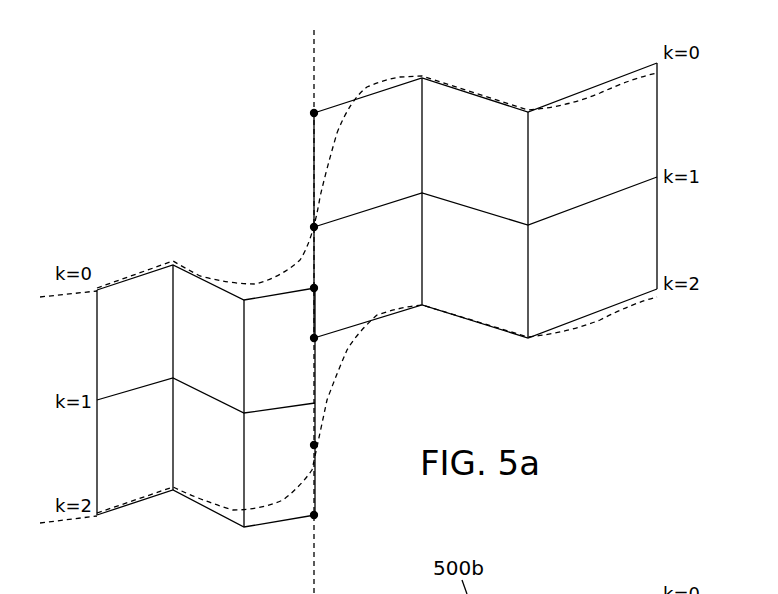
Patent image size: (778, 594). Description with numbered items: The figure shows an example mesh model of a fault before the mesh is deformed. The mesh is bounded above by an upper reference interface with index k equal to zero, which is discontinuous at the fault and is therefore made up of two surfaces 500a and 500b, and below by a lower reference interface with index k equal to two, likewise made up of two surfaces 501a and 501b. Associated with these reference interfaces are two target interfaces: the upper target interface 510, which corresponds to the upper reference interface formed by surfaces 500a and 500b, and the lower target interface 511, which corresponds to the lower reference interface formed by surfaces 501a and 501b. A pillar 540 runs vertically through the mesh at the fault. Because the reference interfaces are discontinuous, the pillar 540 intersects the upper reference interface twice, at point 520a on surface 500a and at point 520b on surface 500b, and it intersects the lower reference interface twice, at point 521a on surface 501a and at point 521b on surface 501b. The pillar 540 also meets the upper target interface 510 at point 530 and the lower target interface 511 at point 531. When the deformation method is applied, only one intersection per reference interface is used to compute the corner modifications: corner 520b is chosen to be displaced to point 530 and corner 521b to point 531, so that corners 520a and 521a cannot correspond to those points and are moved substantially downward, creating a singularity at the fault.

The surface of upper reference interface 500a is at (200, 277).
The surface of upper reference interface 500b is at (477, 92).
The surface of lower reference interface 501a is at (208, 513).
The surface of lower reference interface 501b is at (496, 333).
The upper target interface 510 is at (283, 262).
The lower target interface 511 is at (352, 355).
The intersection point 520a is at (314, 288).
The intersection point 520b is at (314, 113).
The intersection point 521a is at (315, 518).
The intersection point 521b is at (314, 338).
The point 530 is at (314, 227).
The point 531 is at (314, 445).
The pillar 540 is at (320, 553).